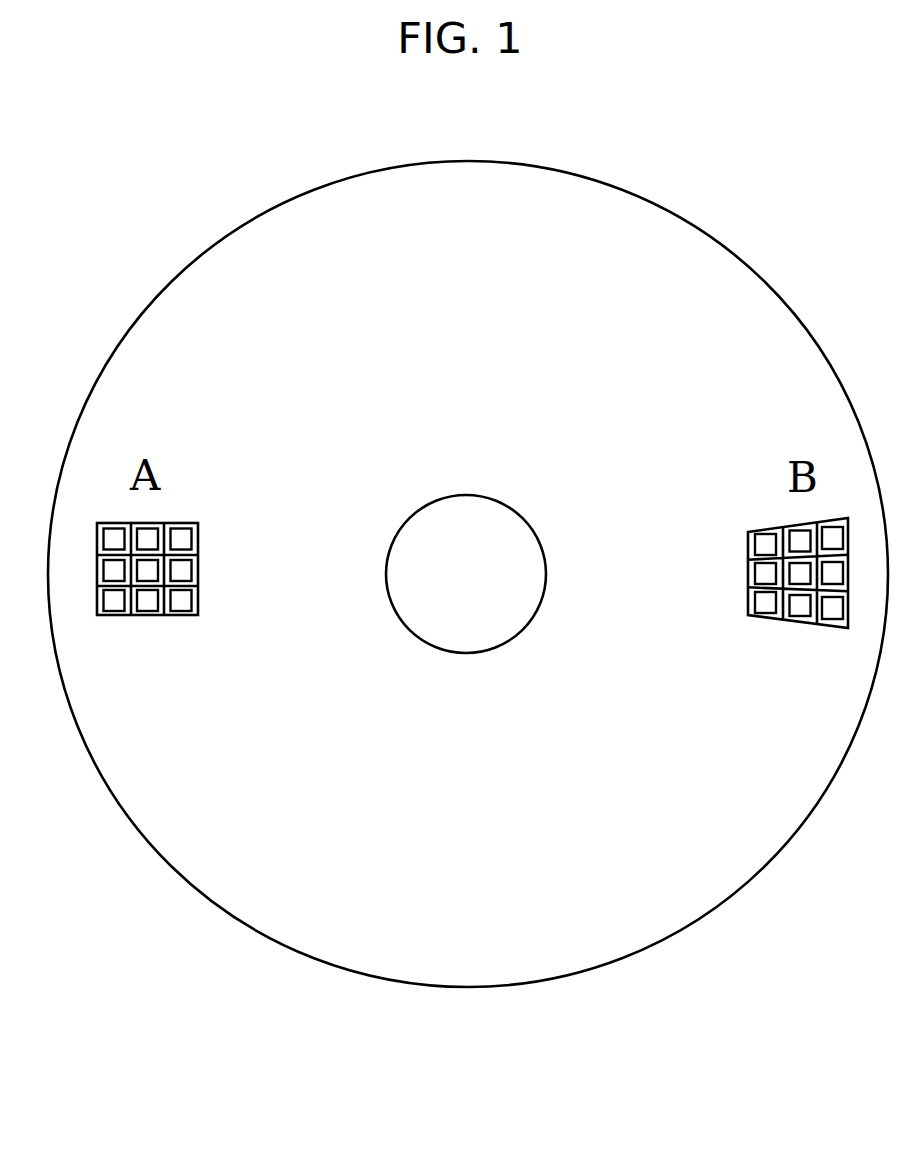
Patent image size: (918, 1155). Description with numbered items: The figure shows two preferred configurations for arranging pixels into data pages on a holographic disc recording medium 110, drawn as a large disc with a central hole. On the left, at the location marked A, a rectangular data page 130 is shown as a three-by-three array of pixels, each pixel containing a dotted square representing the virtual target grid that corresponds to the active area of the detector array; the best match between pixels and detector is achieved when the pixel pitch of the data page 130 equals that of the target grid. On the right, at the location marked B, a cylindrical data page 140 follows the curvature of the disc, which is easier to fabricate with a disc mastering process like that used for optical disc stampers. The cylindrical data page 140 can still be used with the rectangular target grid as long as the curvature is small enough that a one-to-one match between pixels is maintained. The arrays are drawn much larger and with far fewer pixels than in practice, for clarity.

The holographic disc recording medium 110 is at (130, 820).
The data page 130 is at (190, 586).
The cylindrical data page 140 is at (756, 592).